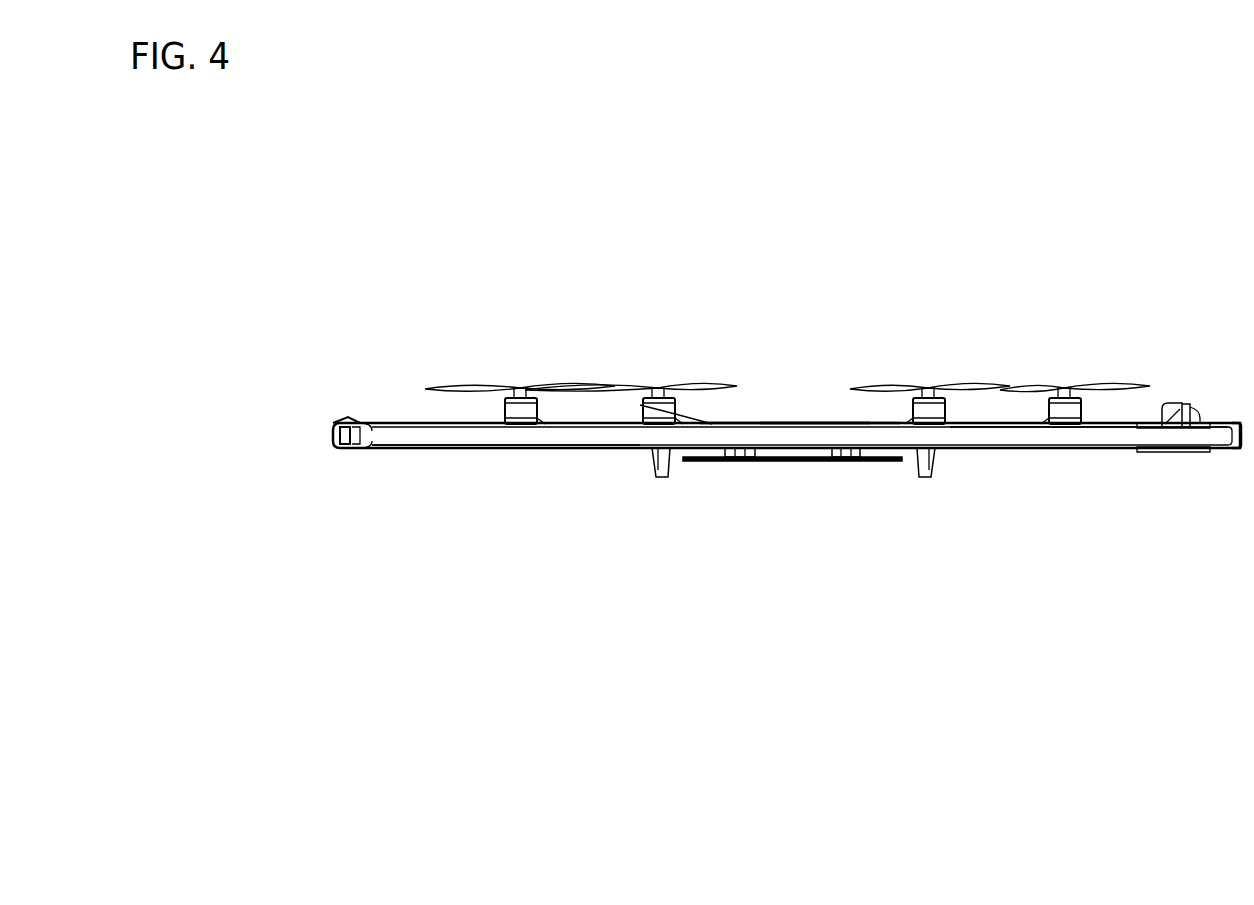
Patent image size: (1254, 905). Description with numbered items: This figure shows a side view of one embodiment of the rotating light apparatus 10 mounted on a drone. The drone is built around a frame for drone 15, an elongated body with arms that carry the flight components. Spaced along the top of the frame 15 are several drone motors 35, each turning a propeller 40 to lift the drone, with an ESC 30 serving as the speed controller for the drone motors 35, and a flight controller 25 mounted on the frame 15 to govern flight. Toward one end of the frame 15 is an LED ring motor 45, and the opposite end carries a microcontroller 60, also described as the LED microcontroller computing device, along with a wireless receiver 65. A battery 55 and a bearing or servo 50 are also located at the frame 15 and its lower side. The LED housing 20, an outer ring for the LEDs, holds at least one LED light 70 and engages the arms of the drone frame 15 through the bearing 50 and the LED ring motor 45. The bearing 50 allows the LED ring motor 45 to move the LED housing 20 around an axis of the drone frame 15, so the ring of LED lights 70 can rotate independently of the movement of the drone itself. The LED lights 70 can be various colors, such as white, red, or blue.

The apparatus 10 is at (532, 446).
The frame for drone 15 is at (757, 422).
The LED housing 20 is at (1085, 426).
The flight controller 25 is at (796, 422).
The ESC 30 is at (700, 422).
The drone motor 35 is at (930, 384).
The propeller 40 is at (698, 413).
The LED ring motor 45 is at (1175, 405).
The bearing or servo 50 is at (413, 446).
The battery 55 is at (336, 448).
The microcontroller 60 is at (335, 424).
The wireless receiver 65 is at (338, 421).
The LED light 70 is at (960, 445).